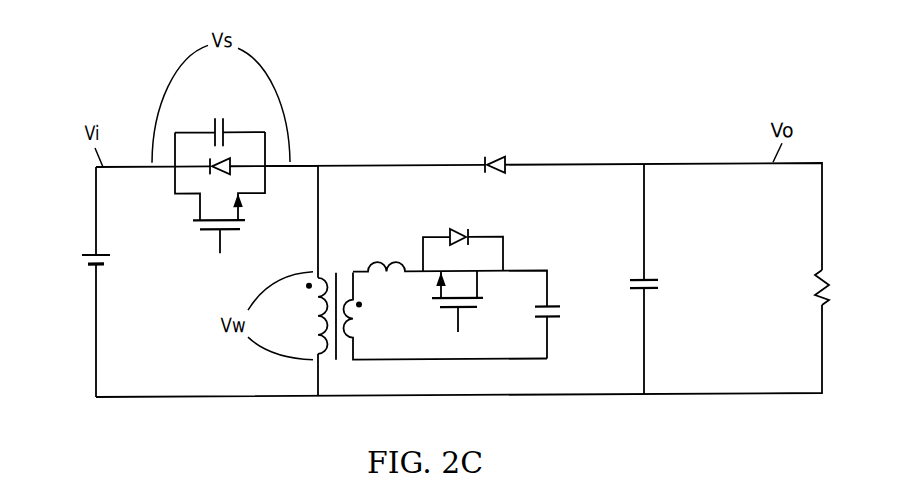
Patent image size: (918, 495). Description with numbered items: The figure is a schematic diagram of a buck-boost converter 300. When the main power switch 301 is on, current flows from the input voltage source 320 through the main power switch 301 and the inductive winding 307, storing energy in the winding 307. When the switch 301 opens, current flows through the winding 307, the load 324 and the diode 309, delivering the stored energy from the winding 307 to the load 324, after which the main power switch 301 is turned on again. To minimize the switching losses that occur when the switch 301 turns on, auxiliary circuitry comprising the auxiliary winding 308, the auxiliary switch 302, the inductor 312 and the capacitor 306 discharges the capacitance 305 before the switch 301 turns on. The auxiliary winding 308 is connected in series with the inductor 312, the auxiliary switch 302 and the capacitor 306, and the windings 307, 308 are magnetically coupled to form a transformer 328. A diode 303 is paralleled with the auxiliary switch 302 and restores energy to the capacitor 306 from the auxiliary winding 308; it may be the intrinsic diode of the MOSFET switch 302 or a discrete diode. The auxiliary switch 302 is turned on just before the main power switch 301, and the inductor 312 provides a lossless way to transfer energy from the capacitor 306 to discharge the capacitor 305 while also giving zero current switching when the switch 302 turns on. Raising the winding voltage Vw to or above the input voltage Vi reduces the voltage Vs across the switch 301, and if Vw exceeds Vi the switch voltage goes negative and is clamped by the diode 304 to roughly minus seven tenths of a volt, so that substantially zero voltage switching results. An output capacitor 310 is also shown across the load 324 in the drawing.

The converter 300 is at (543, 80).
The main power switch 301 is at (222, 233).
The auxiliary switch 302 is at (465, 319).
The diode 303 is at (458, 229).
The diode 304 is at (210, 171).
The capacitance 305 is at (220, 119).
The capacitor 306 is at (557, 323).
The inductive winding 307 is at (318, 344).
The auxiliary winding 308 is at (352, 326).
The diode 309 is at (495, 160).
The output capacitor 310 is at (663, 286).
The inductor 312 is at (385, 259).
The input voltage source 320 is at (84, 259).
The load 324 is at (828, 286).
The transformer 328 is at (350, 296).